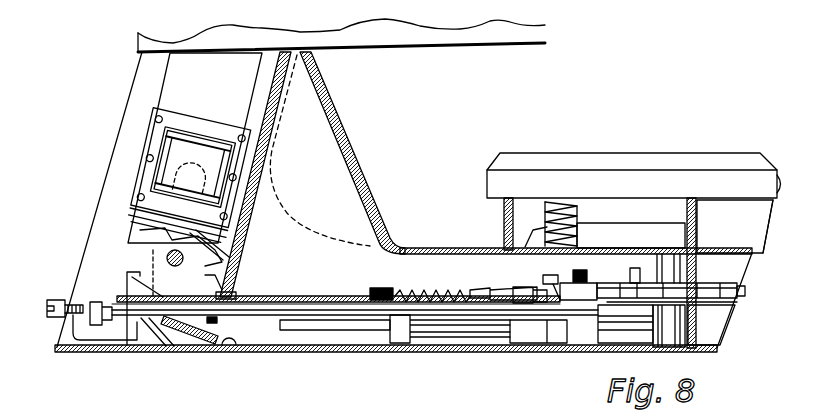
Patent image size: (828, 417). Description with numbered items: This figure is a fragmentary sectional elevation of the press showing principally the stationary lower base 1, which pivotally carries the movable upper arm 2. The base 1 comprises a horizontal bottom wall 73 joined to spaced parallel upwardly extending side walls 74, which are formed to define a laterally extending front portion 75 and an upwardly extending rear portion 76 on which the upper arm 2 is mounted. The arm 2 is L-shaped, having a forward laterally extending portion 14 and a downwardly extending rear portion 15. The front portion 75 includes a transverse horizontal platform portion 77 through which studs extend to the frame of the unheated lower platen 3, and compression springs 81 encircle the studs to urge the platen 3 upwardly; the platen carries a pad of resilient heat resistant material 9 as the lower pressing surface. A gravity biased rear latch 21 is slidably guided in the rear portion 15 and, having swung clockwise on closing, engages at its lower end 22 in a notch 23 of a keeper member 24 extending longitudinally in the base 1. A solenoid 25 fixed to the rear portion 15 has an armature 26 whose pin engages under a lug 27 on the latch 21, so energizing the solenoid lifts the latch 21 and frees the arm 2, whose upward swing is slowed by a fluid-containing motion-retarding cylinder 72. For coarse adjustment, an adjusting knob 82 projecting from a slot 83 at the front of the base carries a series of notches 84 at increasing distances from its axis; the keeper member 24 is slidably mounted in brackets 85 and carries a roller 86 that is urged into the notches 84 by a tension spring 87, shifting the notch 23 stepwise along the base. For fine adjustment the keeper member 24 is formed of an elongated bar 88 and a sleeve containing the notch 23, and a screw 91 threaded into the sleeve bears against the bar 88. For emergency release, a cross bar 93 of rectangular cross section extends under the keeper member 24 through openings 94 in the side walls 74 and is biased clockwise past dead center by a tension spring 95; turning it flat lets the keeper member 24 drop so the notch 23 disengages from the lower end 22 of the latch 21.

The pad of resilient heat resistant material 9 is at (40, 15).
The forward laterally extending portion 14 is at (378, 46).
The upper arm 2 is at (494, 47).
The side walls 74 is at (100, 197).
The upwardly extending rear portion 76 is at (163, 91).
The solenoid 25 is at (147, 140).
The downwardly extending rear portion 15 is at (192, 148).
The rear latch 21 is at (258, 100).
The armature 26 is at (140, 230).
The lug 27 is at (168, 242).
The notch 23 is at (218, 282).
The screw 91 is at (70, 300).
The base 1 is at (355, 150).
The front portion 75 is at (412, 247).
The lower platen 3 is at (485, 198).
The compression springs 81 is at (542, 208).
The platform portion 77 is at (622, 245).
The adjusting knob 82 is at (747, 291).
The slot 83 is at (700, 283).
The brackets 85 is at (542, 285).
The roller 86 is at (576, 268).
The notches 84 is at (628, 283).
The lower end 22 is at (236, 296).
The keeper member 24 is at (323, 297).
The tension spring 87 is at (425, 290).
The elongated bar 88 is at (418, 318).
The motion-retarding cylinder 72 is at (453, 330).
The bottom wall 73 is at (312, 352).
The tension spring 95 is at (192, 350).
The openings 94 is at (141, 350).
The cross bar 93 is at (170, 350).